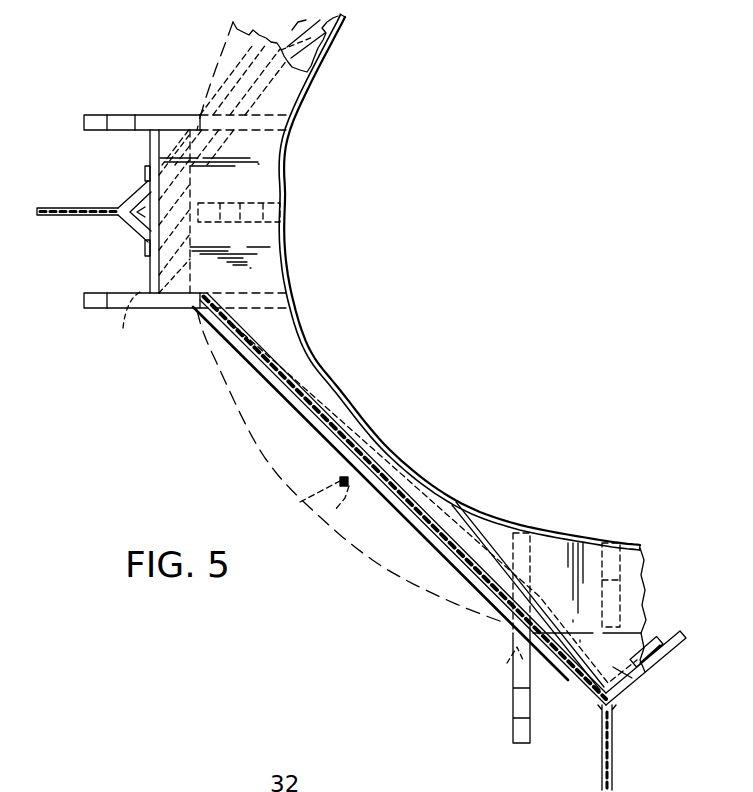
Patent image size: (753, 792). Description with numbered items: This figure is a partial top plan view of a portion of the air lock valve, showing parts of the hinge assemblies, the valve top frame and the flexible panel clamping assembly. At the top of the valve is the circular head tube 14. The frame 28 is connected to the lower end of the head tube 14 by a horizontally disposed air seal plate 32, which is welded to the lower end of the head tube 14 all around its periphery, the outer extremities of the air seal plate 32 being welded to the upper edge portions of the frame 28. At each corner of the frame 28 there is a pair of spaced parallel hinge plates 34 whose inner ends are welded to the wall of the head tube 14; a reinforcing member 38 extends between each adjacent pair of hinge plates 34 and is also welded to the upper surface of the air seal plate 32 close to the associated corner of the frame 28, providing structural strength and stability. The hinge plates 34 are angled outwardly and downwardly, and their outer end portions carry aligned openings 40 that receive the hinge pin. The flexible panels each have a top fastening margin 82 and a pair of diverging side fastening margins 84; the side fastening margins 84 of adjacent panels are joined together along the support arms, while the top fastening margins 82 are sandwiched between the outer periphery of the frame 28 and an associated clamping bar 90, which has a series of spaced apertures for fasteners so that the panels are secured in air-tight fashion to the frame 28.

The circular head tube 14 is at (513, 524).
The frame 28 is at (467, 552).
The air seal plate 32 is at (270, 325).
The hinge plates 34 is at (96, 115).
The reinforcing member 38 is at (160, 146).
The aligned openings 40 is at (121, 323).
The top fastening margin 82 is at (528, 628).
The side fastening margins 84 is at (50, 207).
The clamping bar 90 is at (420, 532).